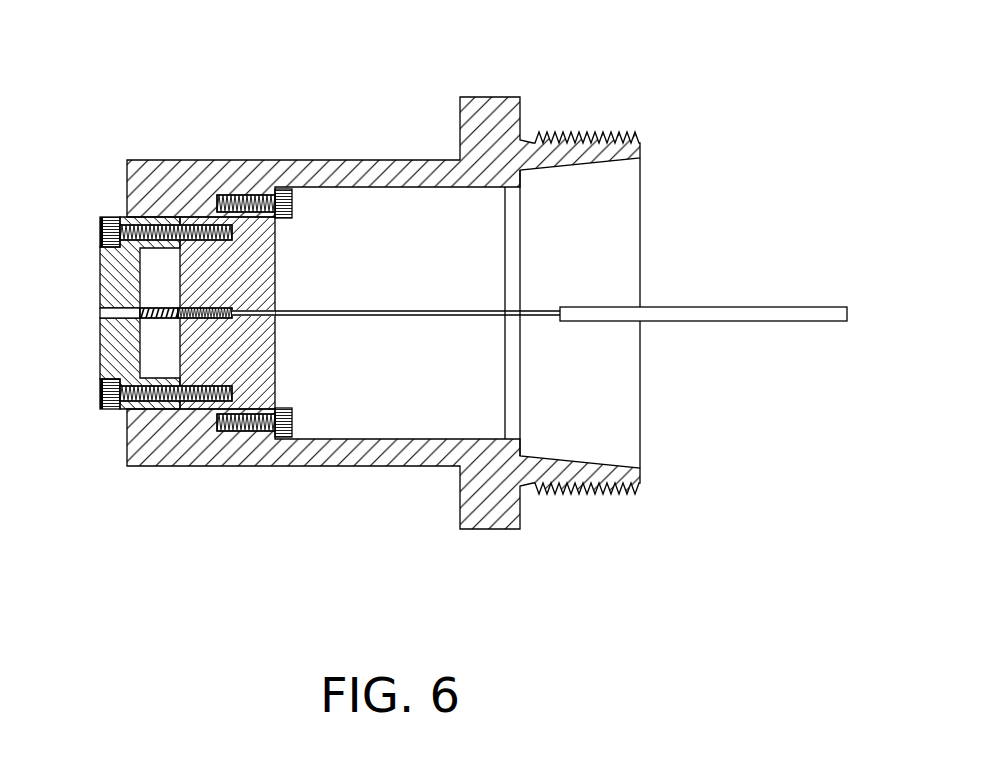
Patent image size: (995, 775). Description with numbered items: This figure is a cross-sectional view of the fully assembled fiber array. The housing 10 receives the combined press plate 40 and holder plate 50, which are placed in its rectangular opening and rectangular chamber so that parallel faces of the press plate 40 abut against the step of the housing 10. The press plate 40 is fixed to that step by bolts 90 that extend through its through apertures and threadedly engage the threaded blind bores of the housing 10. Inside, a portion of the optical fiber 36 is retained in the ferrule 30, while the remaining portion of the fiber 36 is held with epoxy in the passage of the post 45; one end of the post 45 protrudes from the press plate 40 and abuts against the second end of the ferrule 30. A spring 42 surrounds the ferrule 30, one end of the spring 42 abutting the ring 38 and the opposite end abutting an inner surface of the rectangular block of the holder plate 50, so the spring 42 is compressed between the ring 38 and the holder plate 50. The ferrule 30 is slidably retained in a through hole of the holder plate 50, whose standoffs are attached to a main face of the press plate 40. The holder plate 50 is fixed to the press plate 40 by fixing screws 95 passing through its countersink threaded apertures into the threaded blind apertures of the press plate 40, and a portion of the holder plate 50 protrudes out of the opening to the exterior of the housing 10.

The housing 10 is at (323, 150).
The ferrule 30 is at (108, 312).
The optical fiber 36 is at (428, 320).
The ring 38 is at (172, 305).
The press plate 40 is at (282, 343).
The spring 42 is at (148, 321).
The post 45 is at (195, 325).
The holder plate 50 is at (84, 366).
The bolt 90 is at (288, 188).
The fixing screw 95 is at (102, 216).